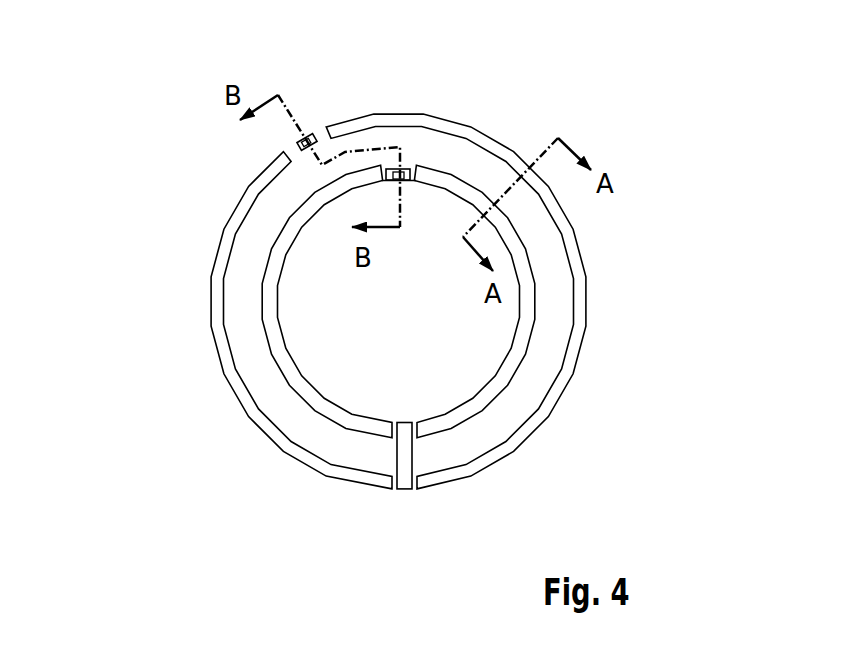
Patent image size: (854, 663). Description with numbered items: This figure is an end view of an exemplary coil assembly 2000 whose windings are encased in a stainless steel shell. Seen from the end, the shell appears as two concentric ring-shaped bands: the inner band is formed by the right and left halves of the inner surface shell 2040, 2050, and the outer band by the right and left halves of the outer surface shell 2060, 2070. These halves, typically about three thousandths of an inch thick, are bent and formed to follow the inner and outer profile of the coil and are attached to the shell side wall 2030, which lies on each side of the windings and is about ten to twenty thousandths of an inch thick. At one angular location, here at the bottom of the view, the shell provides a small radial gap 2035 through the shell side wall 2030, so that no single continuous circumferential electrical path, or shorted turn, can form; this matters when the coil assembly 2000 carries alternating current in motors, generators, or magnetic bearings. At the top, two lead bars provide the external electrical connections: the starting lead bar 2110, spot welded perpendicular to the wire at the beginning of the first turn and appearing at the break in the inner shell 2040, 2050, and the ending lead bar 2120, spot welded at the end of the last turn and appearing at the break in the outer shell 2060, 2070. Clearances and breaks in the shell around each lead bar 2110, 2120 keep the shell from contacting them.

The coil assembly 2000 is at (148, 122).
The shell side wall 2030 is at (565, 315).
The radial gap 2035 is at (407, 493).
The right half of inner surface shell 2040 is at (523, 357).
The left half of inner surface shell 2050 is at (315, 398).
The right half of outer surface shell 2060 is at (582, 268).
The left half of outer surface shell 2070 is at (225, 357).
The starting lead bar 2110 is at (403, 172).
The ending lead bar 2120 is at (303, 133).